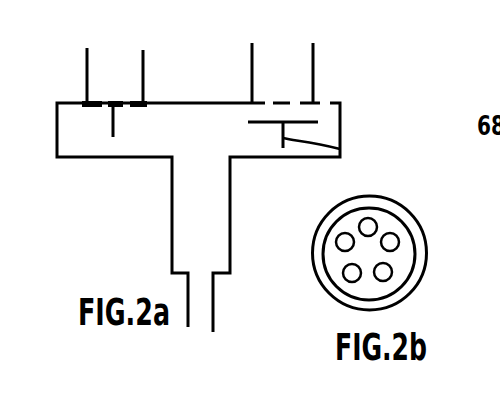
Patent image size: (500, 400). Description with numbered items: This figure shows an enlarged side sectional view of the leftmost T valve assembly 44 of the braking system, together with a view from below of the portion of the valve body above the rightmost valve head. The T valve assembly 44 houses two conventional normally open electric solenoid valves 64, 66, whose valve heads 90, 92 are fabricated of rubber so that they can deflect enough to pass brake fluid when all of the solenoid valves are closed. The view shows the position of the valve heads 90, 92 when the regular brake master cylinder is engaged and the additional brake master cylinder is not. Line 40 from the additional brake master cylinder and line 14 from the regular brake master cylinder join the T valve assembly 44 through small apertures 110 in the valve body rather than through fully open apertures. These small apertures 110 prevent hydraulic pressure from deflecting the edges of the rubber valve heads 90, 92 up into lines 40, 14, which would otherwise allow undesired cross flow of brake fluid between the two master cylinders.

In FIG. 2A, the line 14 is at (313, 72).
In FIG. 2A, the line 40 is at (86, 78).
In FIG. 2A, the T valve assembly 44 is at (152, 182).
In FIG. 2A, the solenoid valve 64 is at (113, 106).
In FIG. 2A, the solenoid valve 66 is at (340, 149).
In FIG. 2A, the valve head 90 is at (140, 108).
In FIG. 2A, the valve head 92 is at (308, 122).
In FIG. 2B, the small apertures 110 is at (392, 268).